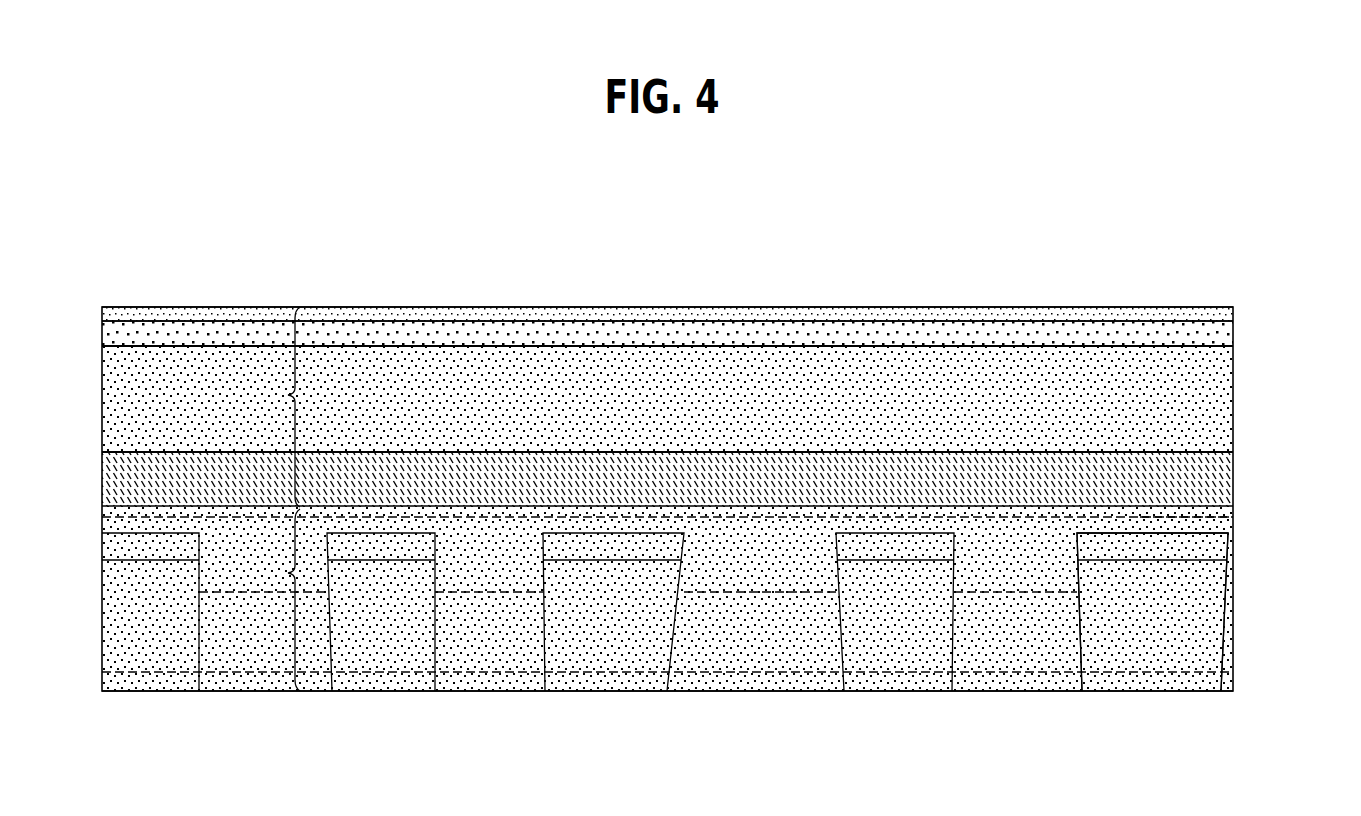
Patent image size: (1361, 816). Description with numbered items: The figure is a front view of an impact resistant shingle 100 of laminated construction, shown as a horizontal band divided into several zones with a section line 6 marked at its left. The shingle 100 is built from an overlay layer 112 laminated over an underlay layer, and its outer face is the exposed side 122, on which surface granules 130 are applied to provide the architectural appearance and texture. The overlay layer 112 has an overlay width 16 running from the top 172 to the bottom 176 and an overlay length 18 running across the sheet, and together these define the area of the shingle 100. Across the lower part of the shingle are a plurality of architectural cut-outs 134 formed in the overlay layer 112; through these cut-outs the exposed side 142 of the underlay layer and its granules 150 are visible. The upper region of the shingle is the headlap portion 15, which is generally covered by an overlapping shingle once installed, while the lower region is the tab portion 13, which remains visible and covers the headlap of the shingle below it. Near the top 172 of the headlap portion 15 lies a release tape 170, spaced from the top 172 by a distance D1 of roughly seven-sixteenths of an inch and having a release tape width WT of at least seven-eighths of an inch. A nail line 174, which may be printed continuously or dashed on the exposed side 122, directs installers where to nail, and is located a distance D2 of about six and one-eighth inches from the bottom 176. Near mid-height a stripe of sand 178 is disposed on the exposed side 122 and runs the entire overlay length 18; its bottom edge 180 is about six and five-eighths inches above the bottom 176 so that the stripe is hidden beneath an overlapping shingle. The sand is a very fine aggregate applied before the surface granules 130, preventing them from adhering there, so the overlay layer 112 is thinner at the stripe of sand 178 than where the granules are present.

The impact resistant shingle 100 is at (132, 271).
The overlay layer 112 is at (950, 378).
The exposed side 122 is at (760, 390).
The surface granules 130 is at (182, 382).
The architectural cut-outs 134 is at (899, 653).
The exposed side 142 is at (1177, 662).
The granules 150 is at (600, 632).
The release tape 170 is at (673, 333).
The top 172 is at (422, 307).
The nail line 174 is at (610, 515).
The bottom 176 is at (735, 692).
The stripe of sand 178 is at (1057, 470).
The bottom edge 180 is at (1224, 521).
The tab portion 13 is at (276, 600).
The headlap portion 15 is at (275, 407).
The overlay width 16 is at (95, 691).
The overlay length 18 is at (1235, 268).
The distance D1 is at (1253, 342).
The distance D2 is at (98, 517).
The release tape width WT is at (1237, 346).
The section line 6 is at (437, 213).